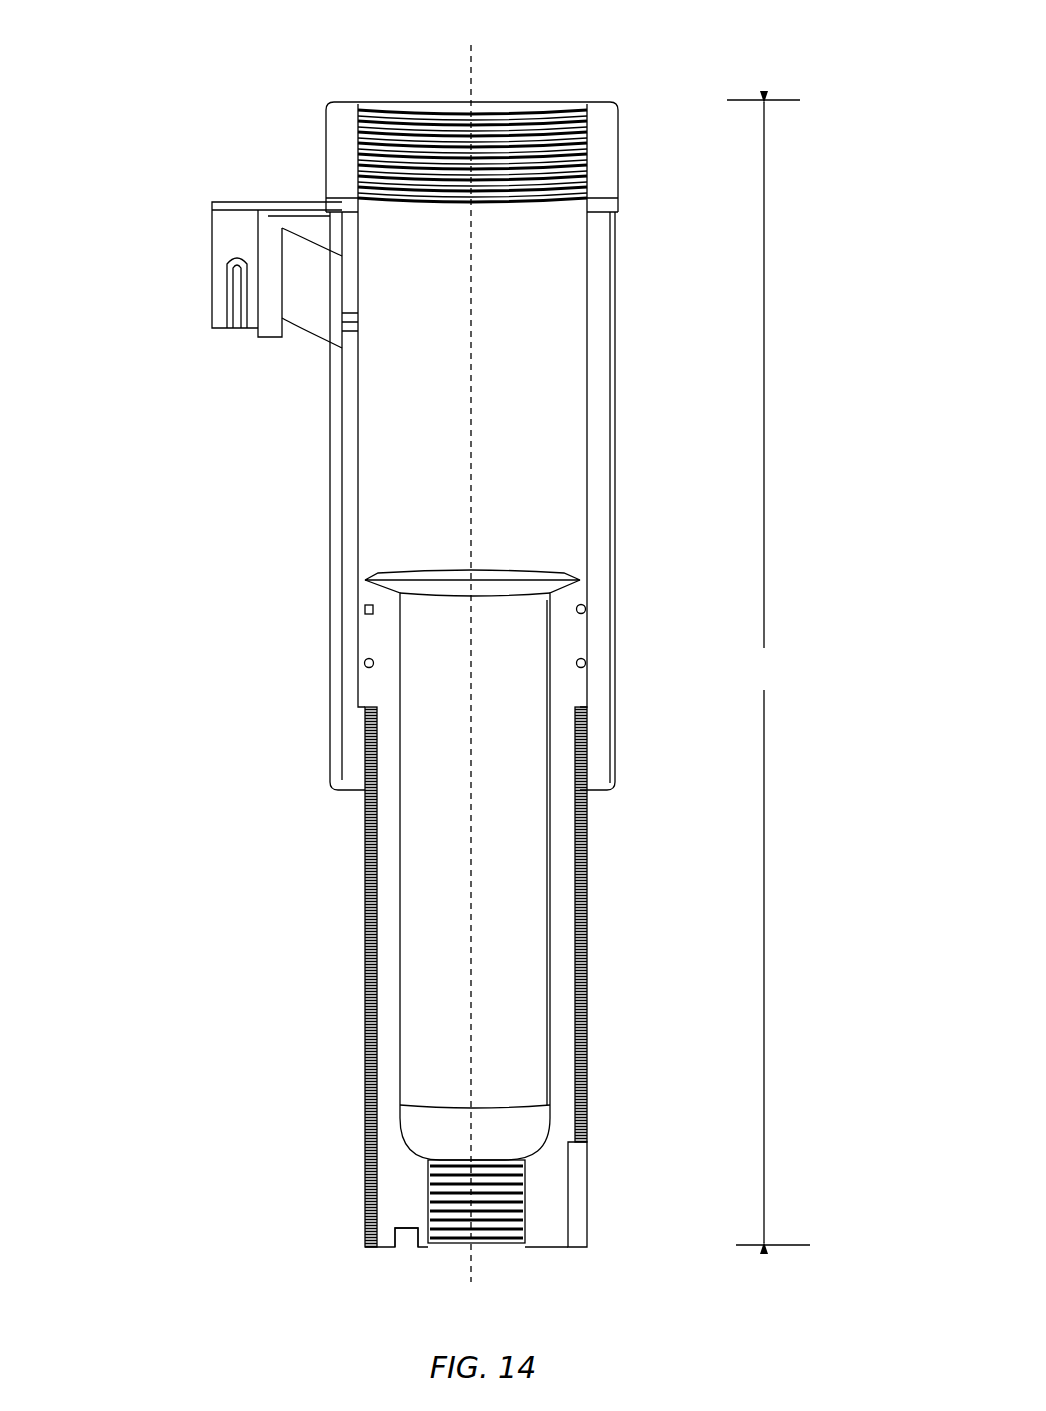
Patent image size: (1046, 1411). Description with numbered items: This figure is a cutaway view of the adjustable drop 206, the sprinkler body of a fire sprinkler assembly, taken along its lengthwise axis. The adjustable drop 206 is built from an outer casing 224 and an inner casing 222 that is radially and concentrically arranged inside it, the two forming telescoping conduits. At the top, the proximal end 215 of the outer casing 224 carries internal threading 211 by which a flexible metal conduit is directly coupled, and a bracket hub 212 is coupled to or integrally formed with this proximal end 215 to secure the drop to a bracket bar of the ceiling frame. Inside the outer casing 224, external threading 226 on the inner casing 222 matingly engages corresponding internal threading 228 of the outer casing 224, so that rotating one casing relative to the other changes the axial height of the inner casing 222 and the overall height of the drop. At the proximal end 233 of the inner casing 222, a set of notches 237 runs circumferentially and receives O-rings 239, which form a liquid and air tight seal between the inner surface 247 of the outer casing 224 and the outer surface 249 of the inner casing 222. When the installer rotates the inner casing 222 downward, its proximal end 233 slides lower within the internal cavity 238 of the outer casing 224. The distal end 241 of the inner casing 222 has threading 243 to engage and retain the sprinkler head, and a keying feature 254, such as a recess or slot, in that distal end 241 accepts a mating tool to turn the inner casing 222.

The adjustable drop 206 is at (464, 667).
The internal threading 211 is at (557, 100).
The proximal end 215 is at (526, 112).
The bracket hub 212 is at (215, 232).
The inner surface 247 is at (370, 380).
The outer casing 224 is at (335, 428).
The internal cavity 238 is at (418, 508).
The outer surface 249 is at (360, 586).
The proximal end 233 is at (383, 628).
The O-rings 239 is at (585, 610).
The notches 237 is at (585, 672).
The internal threading 228 is at (368, 738).
The external threading 226 is at (454, 997).
The inner casing 222 is at (460, 925).
The distal end 241 is at (363, 1200).
The keying feature 254 is at (405, 1248).
The threading 243 is at (512, 1244).